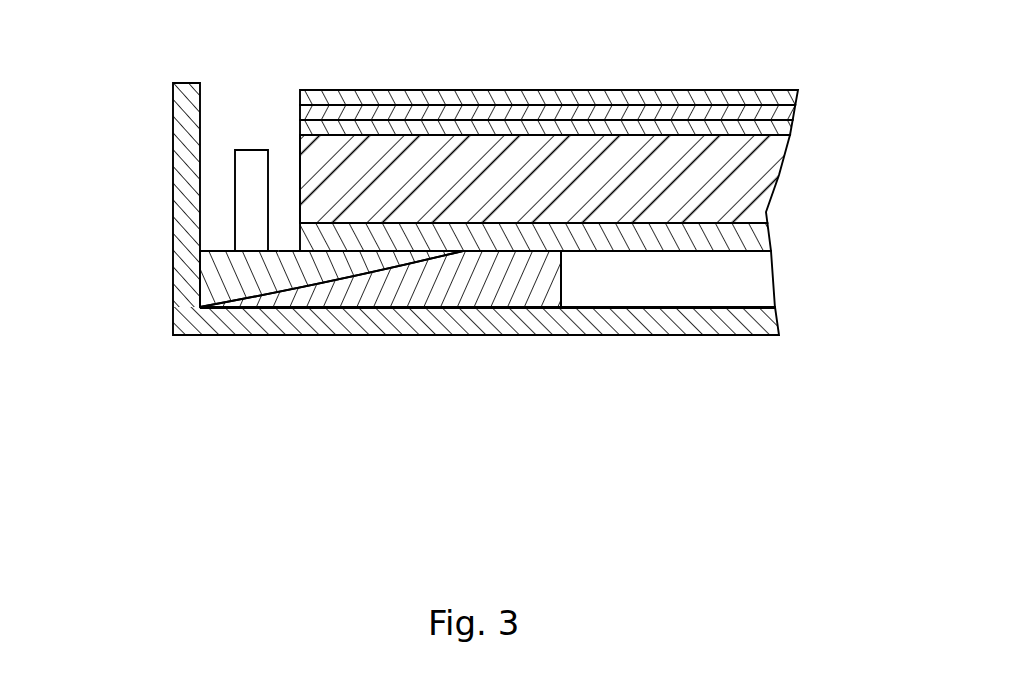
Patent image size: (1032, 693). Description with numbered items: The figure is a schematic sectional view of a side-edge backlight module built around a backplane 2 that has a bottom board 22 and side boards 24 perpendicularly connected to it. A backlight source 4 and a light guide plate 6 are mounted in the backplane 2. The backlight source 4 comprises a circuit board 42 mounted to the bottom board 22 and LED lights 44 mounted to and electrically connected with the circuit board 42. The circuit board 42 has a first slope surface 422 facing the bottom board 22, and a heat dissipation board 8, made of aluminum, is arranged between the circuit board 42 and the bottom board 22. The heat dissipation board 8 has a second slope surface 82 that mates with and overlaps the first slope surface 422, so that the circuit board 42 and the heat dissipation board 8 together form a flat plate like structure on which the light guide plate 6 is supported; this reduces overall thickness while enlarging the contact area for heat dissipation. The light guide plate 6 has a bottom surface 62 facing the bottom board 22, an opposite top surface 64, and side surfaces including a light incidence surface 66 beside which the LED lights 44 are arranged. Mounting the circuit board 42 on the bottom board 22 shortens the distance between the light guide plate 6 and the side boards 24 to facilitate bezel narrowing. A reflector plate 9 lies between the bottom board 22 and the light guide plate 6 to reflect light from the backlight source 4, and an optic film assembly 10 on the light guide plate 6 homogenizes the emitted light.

The backplane 2 is at (444, 239).
The bottom board 22 is at (394, 329).
The side board 24 is at (177, 102).
The backlight source 4 is at (245, 244).
The circuit board 42 is at (254, 301).
The first slope surface 422 is at (233, 262).
The LED light 44 is at (245, 172).
The light guide plate 6 is at (561, 227).
The bottom surface 62 is at (593, 223).
The top surface 64 is at (535, 112).
The light incidence surface 66 is at (300, 178).
The heat dissipation board 8 is at (357, 357).
The second slope surface 82 is at (347, 287).
The reflector plate 9 is at (710, 240).
The optic film assembly 10 is at (762, 104).